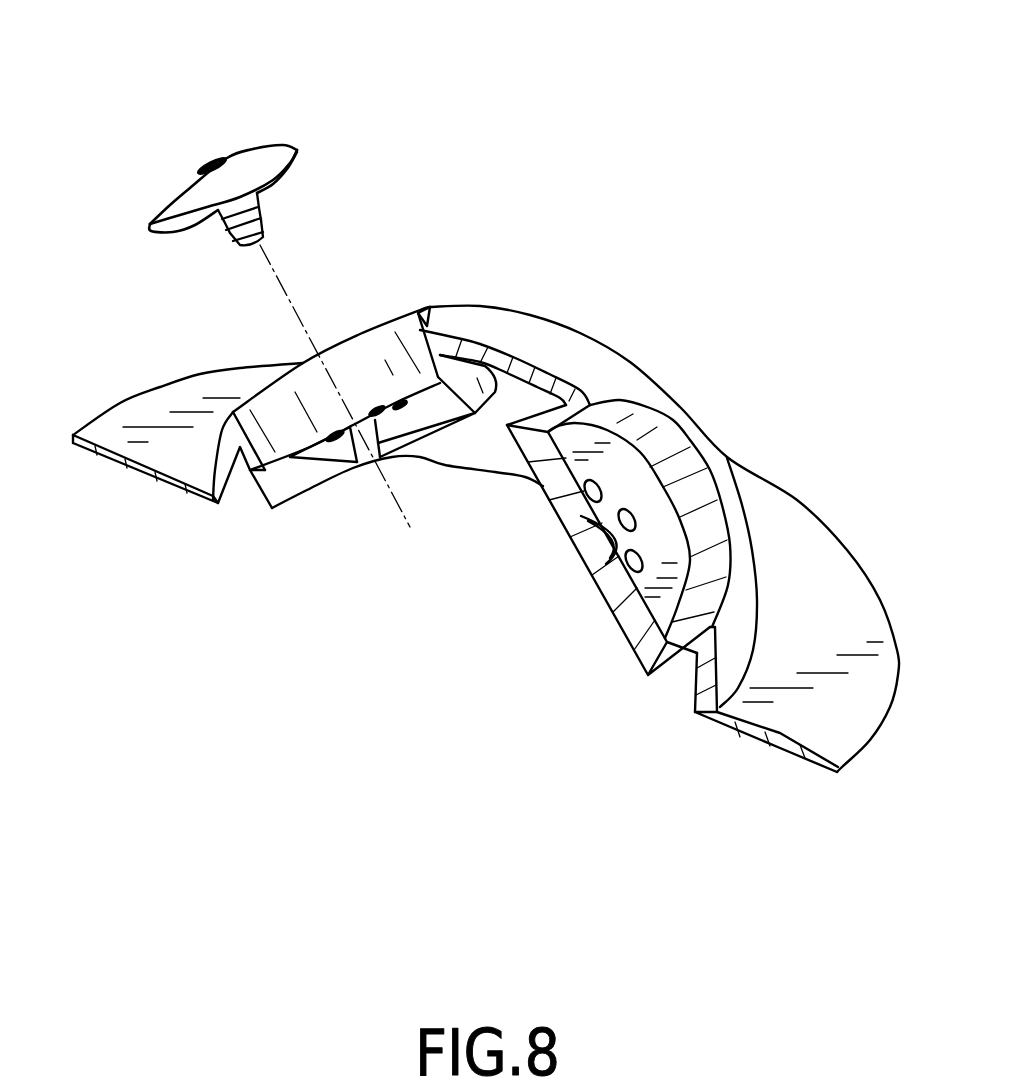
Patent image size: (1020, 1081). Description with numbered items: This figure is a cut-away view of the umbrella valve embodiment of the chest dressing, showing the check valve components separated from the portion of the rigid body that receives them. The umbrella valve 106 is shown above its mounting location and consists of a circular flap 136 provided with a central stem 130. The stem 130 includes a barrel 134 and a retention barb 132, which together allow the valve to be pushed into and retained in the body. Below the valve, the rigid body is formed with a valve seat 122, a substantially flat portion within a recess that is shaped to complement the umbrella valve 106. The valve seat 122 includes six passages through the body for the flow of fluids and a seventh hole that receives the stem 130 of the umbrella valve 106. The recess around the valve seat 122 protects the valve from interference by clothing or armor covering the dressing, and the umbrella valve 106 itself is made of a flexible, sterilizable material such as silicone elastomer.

The umbrella valve 106 is at (259, 146).
The circular flap 136 is at (174, 194).
The barrel 134 is at (267, 200).
The retention barb 132 is at (270, 213).
The stem 130 is at (273, 220).
The valve seat 122 is at (302, 482).